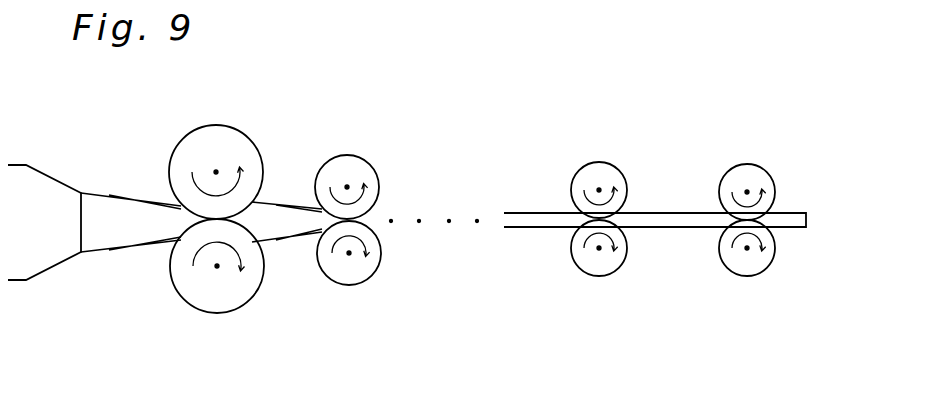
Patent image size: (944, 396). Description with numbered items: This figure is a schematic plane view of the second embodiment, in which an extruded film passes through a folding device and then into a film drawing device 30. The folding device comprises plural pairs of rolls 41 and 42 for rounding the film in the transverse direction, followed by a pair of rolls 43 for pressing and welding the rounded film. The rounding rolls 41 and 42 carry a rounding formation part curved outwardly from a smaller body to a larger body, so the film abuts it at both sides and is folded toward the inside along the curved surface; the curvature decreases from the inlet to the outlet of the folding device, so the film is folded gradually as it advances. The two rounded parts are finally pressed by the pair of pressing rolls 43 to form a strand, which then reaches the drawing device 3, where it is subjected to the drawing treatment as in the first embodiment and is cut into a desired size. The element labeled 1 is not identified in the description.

The slab / workpiece 1 is at (37, 177).
The drawing device 3 is at (725, 139).
The rounding roll 41 is at (235, 142).
The rounding roll 42 is at (362, 168).
The pressing roll 43 is at (600, 173).
The film drawing device 30 is at (748, 167).